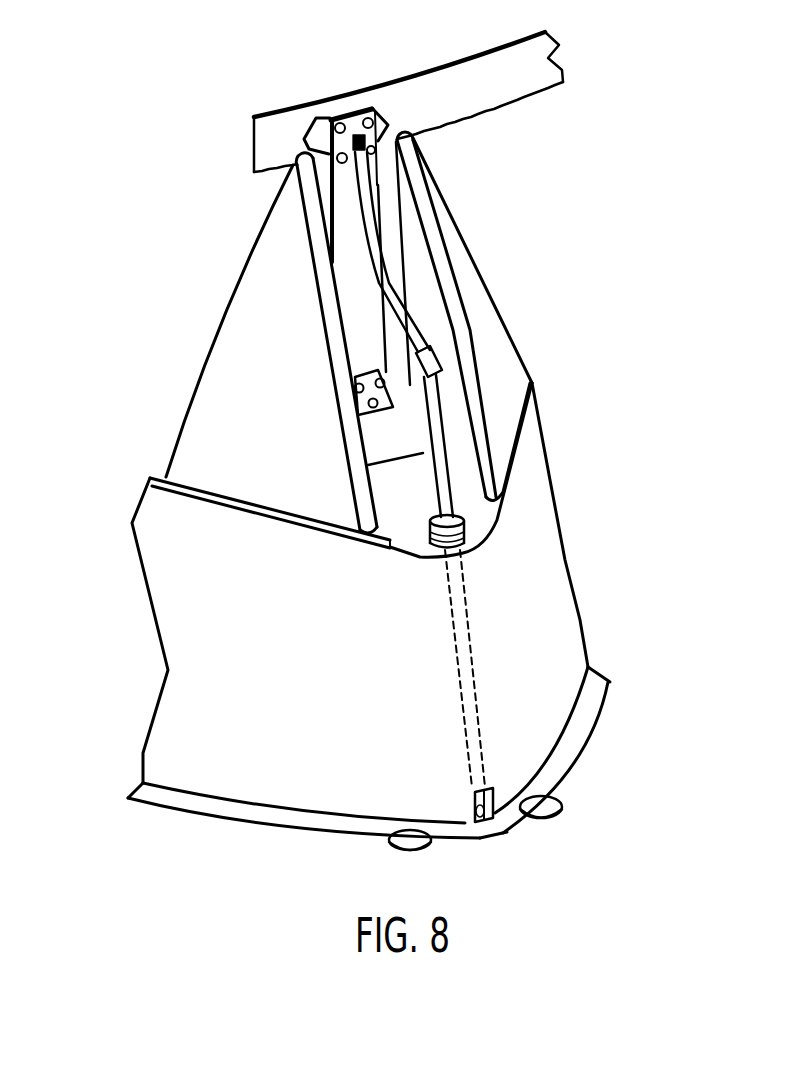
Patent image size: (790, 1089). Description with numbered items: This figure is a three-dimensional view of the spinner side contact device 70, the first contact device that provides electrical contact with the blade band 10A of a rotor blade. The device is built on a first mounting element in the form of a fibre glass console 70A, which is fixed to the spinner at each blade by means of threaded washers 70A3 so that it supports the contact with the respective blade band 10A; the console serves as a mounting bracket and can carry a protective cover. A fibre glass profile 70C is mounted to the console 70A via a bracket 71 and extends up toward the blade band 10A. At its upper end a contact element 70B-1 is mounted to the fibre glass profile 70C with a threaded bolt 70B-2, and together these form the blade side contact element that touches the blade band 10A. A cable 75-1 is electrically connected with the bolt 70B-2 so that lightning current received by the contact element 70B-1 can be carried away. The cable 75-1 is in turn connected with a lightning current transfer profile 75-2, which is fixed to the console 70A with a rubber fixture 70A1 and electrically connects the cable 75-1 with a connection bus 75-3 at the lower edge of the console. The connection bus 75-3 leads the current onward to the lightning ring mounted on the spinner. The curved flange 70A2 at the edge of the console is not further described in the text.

The blade band 10A is at (477, 100).
The spinner side contact device 70 is at (78, 660).
The first mounting element fibre glass console 70A is at (493, 320).
The rubber fixture 70A1 is at (470, 538).
The curved flange 70A2 is at (595, 705).
The threaded washers 70A3 is at (563, 813).
The contact element 70B-1 is at (352, 110).
The threaded bolt 70B-2 is at (310, 128).
The fibre glass profile 70C is at (350, 258).
The bracket 71 is at (368, 375).
The cable 75-1 is at (385, 262).
The lightning current transfer profile 75-2 is at (447, 487).
The connection bus 75-3 is at (487, 817).